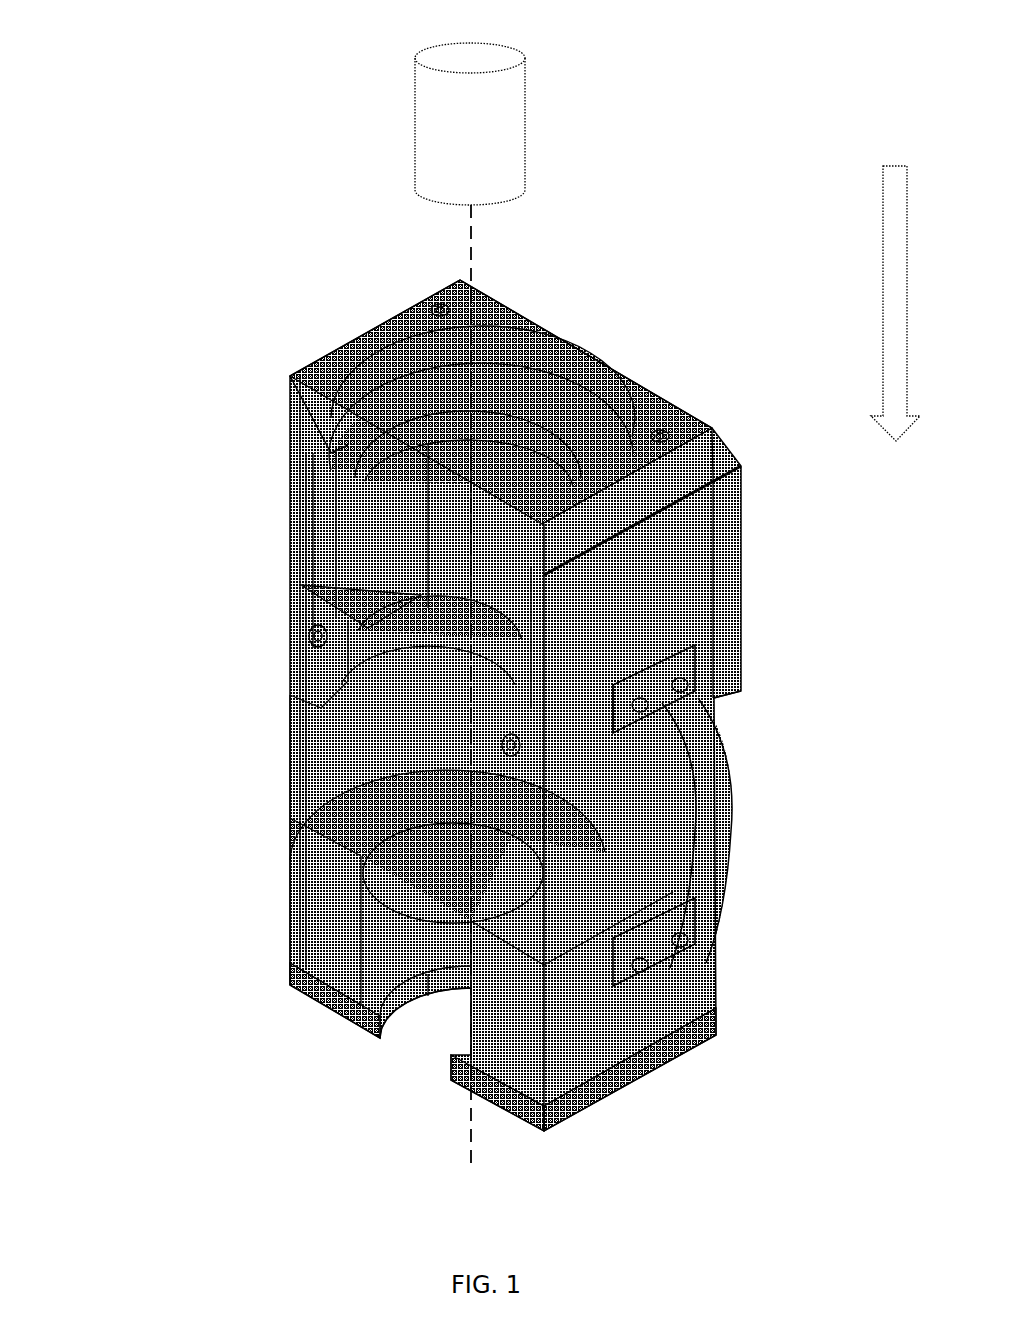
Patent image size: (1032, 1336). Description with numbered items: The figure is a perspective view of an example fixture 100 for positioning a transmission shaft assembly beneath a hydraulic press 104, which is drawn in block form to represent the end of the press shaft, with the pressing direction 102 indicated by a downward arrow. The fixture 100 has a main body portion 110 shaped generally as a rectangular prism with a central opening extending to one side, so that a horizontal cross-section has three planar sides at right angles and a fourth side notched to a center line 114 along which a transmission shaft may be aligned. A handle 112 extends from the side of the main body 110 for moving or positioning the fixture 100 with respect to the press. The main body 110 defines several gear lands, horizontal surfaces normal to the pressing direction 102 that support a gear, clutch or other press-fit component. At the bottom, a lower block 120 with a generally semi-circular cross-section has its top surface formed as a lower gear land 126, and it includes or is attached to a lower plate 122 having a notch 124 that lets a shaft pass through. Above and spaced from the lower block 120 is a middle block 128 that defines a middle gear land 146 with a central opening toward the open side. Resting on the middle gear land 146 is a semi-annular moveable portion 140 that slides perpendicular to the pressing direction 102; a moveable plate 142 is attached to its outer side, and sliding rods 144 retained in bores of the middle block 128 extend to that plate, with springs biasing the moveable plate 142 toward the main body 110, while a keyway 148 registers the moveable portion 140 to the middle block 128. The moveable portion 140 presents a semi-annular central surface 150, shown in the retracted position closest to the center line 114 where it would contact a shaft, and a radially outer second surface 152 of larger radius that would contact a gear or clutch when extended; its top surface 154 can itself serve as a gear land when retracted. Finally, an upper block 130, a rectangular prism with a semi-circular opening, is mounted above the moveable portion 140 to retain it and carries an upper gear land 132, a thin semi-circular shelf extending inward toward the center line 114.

The fixture 100 is at (155, 288).
The pressing direction 102 is at (875, 245).
The hydraulic press 104 is at (408, 138).
The main body portion 110 is at (700, 715).
The handle 112 is at (712, 787).
The center line 114 is at (458, 240).
The lower block 120 is at (694, 977).
The lower plate 122 is at (702, 1022).
The notch 124 is at (393, 1025).
The lower gear land 126 is at (318, 820).
The middle block 128 is at (298, 653).
The upper block 130 is at (388, 300).
The upper gear land 132 is at (320, 440).
The moveable portion 140 is at (320, 510).
The moveable plate 142 is at (738, 572).
The sliding rods 144 is at (302, 630).
The middle gear land 146 is at (360, 598).
The keyway 148 is at (300, 530).
The central surface 150 is at (435, 483).
The second partially radially extending surface 152 is at (360, 500).
The top surface 154 is at (505, 433).